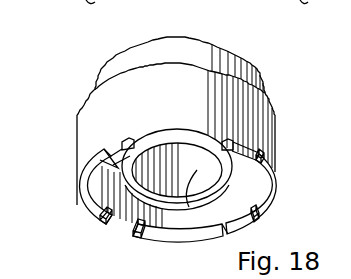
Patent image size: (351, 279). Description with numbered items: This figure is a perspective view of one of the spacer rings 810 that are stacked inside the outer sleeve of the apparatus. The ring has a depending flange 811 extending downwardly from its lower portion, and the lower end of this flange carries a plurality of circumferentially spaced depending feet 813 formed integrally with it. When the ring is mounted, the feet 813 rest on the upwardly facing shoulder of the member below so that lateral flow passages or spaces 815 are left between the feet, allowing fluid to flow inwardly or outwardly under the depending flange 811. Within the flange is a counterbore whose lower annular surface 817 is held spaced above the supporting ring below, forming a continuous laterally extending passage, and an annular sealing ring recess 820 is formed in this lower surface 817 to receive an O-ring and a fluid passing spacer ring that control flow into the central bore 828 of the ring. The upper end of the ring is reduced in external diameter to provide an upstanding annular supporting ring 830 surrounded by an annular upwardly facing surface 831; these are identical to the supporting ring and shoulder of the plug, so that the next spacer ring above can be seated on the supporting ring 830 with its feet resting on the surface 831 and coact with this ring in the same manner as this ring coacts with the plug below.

The upstanding annular supporting ring 830 is at (179, 49).
The annular upwardly facing surface 831 is at (265, 92).
The spacer ring 810 is at (275, 125).
The lower annular surface 817 is at (124, 188).
The bore 828 is at (204, 198).
The depending flange 811 is at (135, 238).
The depending feet 813 is at (100, 225).
The lateral flow passages 815 is at (219, 249).
The annular sealing ring recess 820 is at (112, 170).